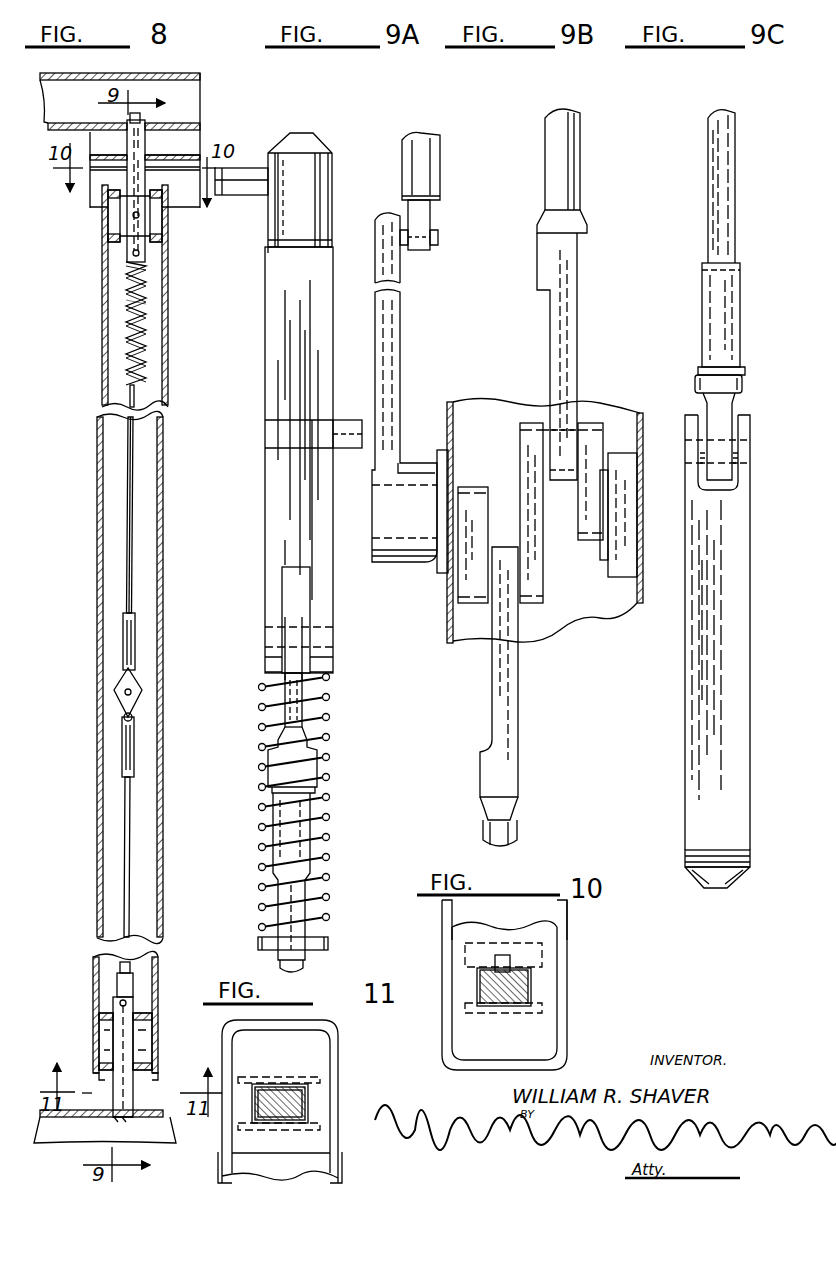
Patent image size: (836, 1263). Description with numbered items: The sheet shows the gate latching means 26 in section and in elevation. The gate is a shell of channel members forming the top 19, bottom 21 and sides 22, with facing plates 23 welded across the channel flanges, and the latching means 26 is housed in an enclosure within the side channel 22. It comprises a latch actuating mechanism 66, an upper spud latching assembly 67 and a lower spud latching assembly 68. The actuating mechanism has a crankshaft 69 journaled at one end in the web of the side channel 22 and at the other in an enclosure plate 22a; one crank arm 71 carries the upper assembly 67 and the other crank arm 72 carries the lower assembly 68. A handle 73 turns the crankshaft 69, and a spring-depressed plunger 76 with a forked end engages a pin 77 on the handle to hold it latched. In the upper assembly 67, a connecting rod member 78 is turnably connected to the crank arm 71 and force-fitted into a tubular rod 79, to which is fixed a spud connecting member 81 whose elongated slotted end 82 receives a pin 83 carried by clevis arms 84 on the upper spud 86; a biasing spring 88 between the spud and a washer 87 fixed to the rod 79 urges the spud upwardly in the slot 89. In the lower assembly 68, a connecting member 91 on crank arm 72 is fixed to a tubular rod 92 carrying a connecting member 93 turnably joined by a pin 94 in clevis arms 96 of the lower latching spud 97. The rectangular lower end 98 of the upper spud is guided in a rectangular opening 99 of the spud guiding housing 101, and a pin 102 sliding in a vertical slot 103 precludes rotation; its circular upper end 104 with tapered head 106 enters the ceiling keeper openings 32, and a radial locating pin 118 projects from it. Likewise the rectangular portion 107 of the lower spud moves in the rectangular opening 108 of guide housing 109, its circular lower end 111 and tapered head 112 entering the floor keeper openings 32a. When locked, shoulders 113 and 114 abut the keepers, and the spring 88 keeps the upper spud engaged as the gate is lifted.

In FIG. 8, the top 19 is at (92, 205).
In FIG. 8, the bottom 21 is at (97, 1099).
In FIG. 8, the side channel 22 is at (98, 455).
In FIG. 9B, the side channel 22 is at (640, 605).
In FIG. 10, the side channel 22 is at (445, 1060).
In FIG. 11, the side channel 22 is at (235, 1024).
In FIG. 9B, the enclosure plate 22a is at (448, 640).
In FIG. 10, the facing plates 23 is at (443, 922).
In FIG. 11, the facing plates 23 is at (220, 1170).
In FIG. 8, the gate latching means 26 is at (122, 522).
In FIG. 8, the openings 32 is at (195, 118).
In FIG. 8, the openings 32a is at (105, 1131).
In FIG. 8, the latch actuating mechanism 66 is at (118, 708).
In FIG. 9B, the latch actuating mechanism 66 is at (460, 590).
In FIG. 8, the upper spud latching assembly 67 is at (140, 570).
In FIG. 9A, the upper spud latching assembly 67 is at (262, 675).
In FIG. 9B, the upper spud latching assembly 67 is at (582, 150).
In FIG. 8, the lower spud latching assembly 68 is at (133, 856).
In FIG. 9B, the lower spud latching assembly 68 is at (522, 778).
In FIG. 9C, the lower spud latching assembly 68 is at (702, 202).
In FIG. 9B, the crankshaft 69 is at (525, 468).
In FIG. 9B, the crank arm 71 is at (550, 428).
In FIG. 9B, the crank arm 72 is at (490, 605).
In FIG. 9B, the handle 73 is at (392, 342).
In FIG. 9B, the spring-depressed plunger 76 is at (422, 152).
In FIG. 9B, the pin 77 is at (437, 238).
In FIG. 9B, the connecting rod member 78 is at (570, 300).
In FIG. 9A, the tubular rod 79 is at (305, 963).
In FIG. 9B, the tubular rod 79 is at (546, 143).
In FIG. 9A, the spud connecting member 81 is at (300, 770).
In FIG. 9A, the elongated slotted end 82 is at (302, 692).
In FIG. 9A, the pin 83 is at (306, 640).
In FIG. 9A, the clevis arms 84 is at (268, 664).
In FIG. 8, the upper spud 86 is at (110, 215).
In FIG. 9A, the upper spud 86 is at (283, 517).
In FIG. 9A, the washer 87 is at (325, 944).
In FIG. 8, the biasing spring 88 is at (125, 338).
In FIG. 9A, the biasing spring 88 is at (322, 838).
In FIG. 8, the slot 89 is at (125, 272).
In FIG. 9A, the slot 89 is at (262, 708).
In FIG. 9B, the connecting member 91 is at (508, 690).
In FIG. 9B, the tubular rod 92 is at (518, 834).
In FIG. 9C, the tubular rod 92 is at (722, 158).
In FIG. 9C, the connecting member 93 is at (720, 416).
In FIG. 9C, the pin 94 is at (735, 445).
In FIG. 9C, the clevis arms 96 is at (690, 440).
In FIG. 8, the lower latching spud 97 is at (113, 1040).
In FIG. 9C, the lower latching spud 97 is at (750, 656).
In FIG. 8, the lower end 98 is at (140, 162).
In FIG. 9A, the lower end 98 is at (296, 303).
In FIG. 8, the rectangular opening 99 is at (162, 212).
In FIG. 10, the rectangular opening 99 is at (482, 990).
In FIG. 8, the spud guiding housing 101 is at (160, 237).
In FIG. 10, the spud guiding housing 101 is at (468, 995).
In FIG. 9A, the pin 102 is at (346, 425).
In FIG. 10, the pin 102 is at (505, 965).
In FIG. 10, the vertical slot 103 is at (495, 958).
In FIG. 8, the upper end 104 is at (128, 122).
In FIG. 9A, the upper end 104 is at (312, 195).
In FIG. 9A, the tapered head 106 is at (302, 145).
In FIG. 8, the portion 107 is at (128, 1095).
In FIG. 9C, the portion 107 is at (707, 717).
In FIG. 11, the portion 107 is at (295, 1108).
In FIG. 11, the rectangular opening 108 is at (268, 1088).
In FIG. 8, the guide housing 109 is at (100, 1027).
In FIG. 11, the guide housing 109 is at (250, 1105).
In FIG. 8, the lower end 111 is at (113, 1120).
In FIG. 9C, the lower end 111 is at (692, 872).
In FIG. 8, the tapered head 112 is at (122, 1119).
In FIG. 9C, the tapered head 112 is at (710, 886).
In FIG. 9A, the shoulder 113 is at (278, 250).
In FIG. 9C, the shoulder 114 is at (692, 858).
In FIG. 9A, the locating pin 118 is at (247, 170).